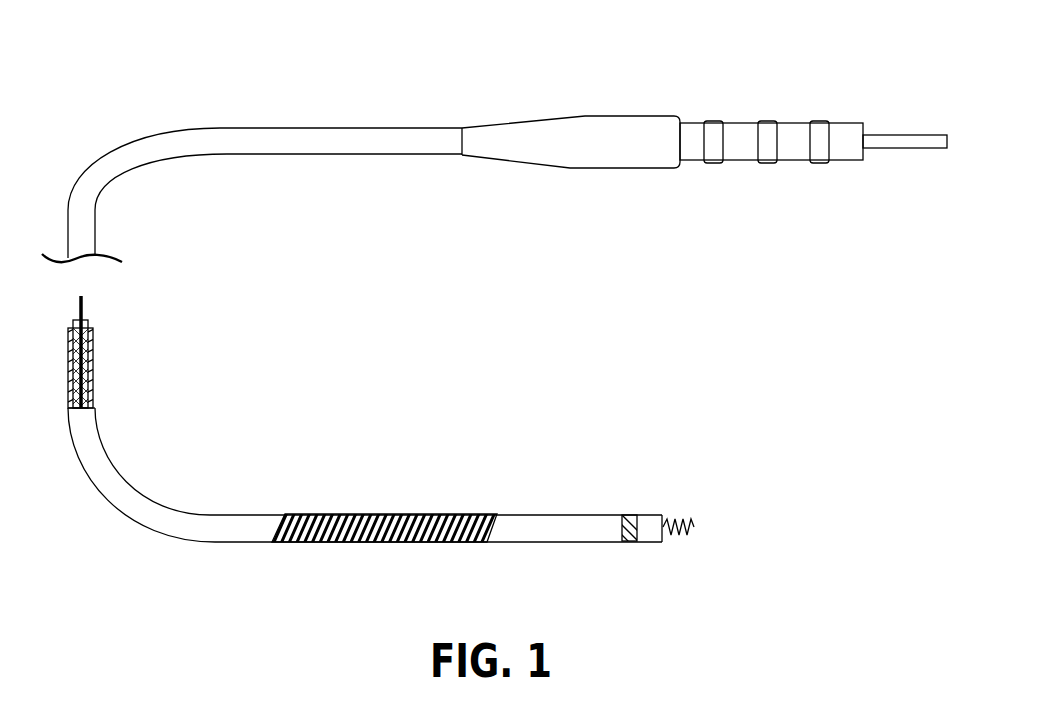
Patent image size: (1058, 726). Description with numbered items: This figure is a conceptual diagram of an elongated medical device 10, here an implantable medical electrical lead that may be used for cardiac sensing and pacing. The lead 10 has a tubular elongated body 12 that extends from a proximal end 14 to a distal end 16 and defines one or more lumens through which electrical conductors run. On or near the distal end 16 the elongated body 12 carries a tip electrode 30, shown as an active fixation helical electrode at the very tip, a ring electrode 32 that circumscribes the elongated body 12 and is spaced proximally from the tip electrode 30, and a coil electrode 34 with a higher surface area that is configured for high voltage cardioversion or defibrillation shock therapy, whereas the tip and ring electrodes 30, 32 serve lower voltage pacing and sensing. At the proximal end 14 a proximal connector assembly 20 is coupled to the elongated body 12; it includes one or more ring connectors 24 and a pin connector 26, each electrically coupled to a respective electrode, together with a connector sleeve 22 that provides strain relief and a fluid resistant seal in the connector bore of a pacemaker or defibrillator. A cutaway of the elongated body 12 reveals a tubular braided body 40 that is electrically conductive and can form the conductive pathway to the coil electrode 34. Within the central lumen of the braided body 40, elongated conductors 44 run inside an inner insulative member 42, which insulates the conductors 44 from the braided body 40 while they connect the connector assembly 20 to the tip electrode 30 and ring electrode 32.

The elongated medical device 10 is at (502, 38).
The elongated body 12 is at (78, 200).
The proximal end 14 is at (462, 157).
The distal end 16 is at (662, 544).
The proximal connector assembly 20 is at (696, 60).
The connector sleeve 22 is at (608, 168).
The ring connectors 24 is at (770, 163).
The pin connector 26 is at (928, 149).
The tip electrode 30 is at (672, 520).
The ring electrode 32 is at (632, 513).
The coil electrode 34 is at (313, 513).
The tubular braided body 40 is at (68, 370).
The inner insulative member 42 is at (84, 320).
The elongated conductors 44 is at (78, 312).